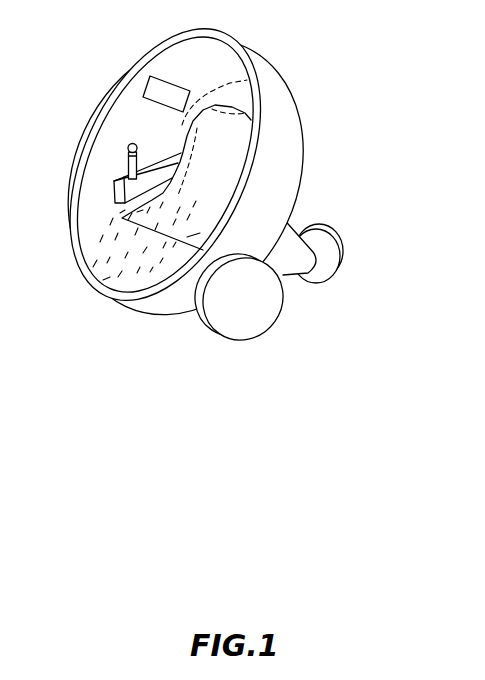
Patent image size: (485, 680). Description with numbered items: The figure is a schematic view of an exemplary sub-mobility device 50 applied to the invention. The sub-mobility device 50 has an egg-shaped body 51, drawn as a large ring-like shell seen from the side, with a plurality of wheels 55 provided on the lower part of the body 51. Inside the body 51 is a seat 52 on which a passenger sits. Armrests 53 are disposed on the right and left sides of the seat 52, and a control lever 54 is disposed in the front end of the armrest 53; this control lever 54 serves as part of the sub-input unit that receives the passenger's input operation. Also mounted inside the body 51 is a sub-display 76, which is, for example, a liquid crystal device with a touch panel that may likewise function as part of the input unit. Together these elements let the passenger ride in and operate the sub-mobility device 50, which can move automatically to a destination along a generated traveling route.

The sub-mobility device 50 is at (234, 178).
The body 51 is at (280, 78).
The seat 52 is at (228, 168).
The armrest 53 is at (112, 191).
The control lever 54 is at (126, 157).
The wheel 55 is at (333, 253).
The sub-display 76 is at (148, 88).